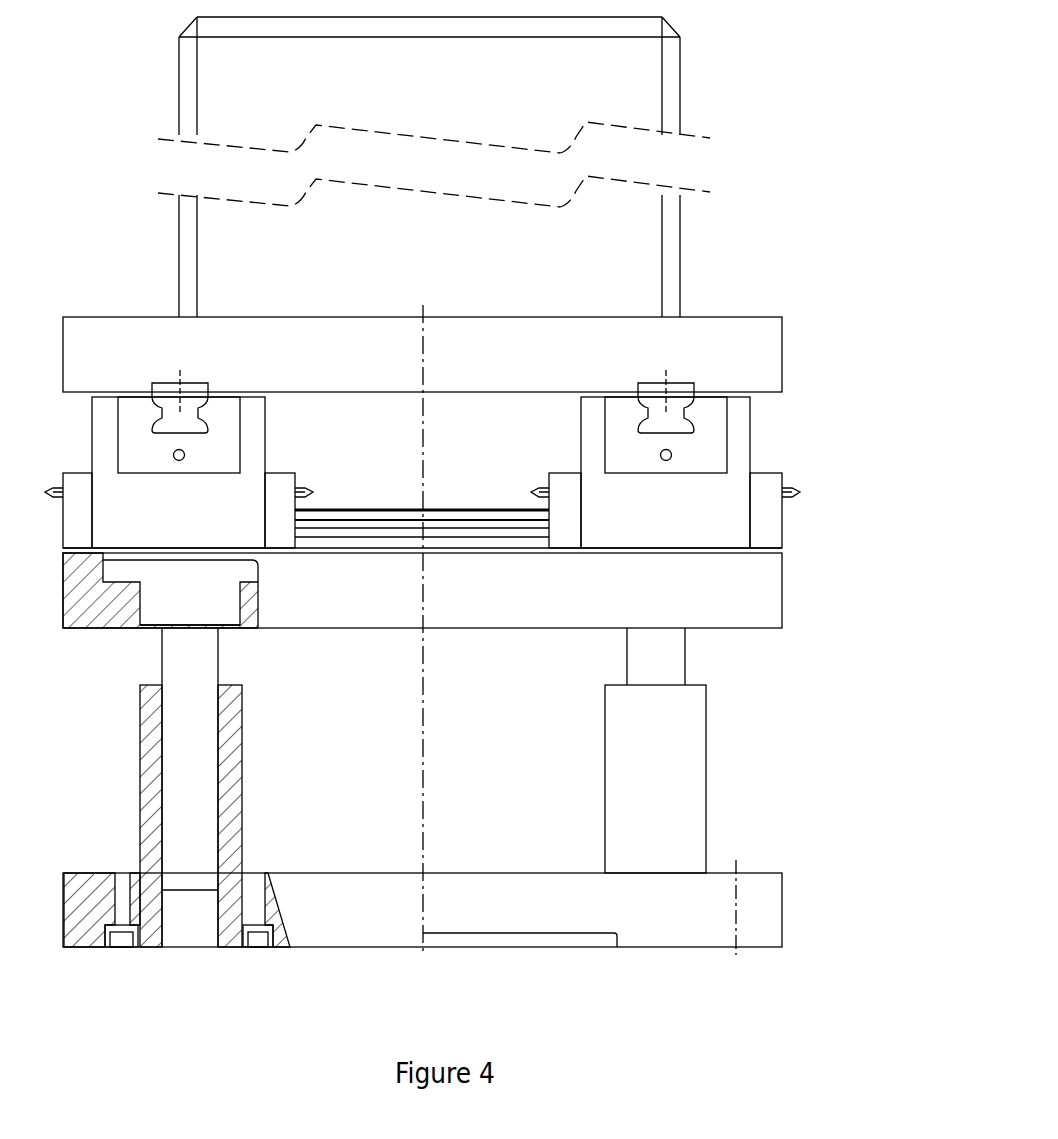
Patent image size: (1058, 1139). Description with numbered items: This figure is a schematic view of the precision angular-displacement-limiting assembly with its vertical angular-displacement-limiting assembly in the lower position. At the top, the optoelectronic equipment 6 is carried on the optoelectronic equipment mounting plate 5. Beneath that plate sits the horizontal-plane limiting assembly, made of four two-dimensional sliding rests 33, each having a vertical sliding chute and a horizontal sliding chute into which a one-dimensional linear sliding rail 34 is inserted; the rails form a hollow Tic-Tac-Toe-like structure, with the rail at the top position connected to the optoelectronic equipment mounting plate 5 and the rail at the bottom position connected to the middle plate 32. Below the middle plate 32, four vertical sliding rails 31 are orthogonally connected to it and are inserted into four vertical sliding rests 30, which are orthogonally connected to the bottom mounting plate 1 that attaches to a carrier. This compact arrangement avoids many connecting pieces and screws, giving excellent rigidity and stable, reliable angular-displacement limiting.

The bottom mounting plate 1 is at (511, 865).
The optoelectronic equipment mounting plate 5 is at (511, 328).
The optoelectronic equipment 6 is at (559, 167).
The vertical sliding rest 30 is at (550, 816).
The vertical sliding rail 31 is at (561, 780).
The middle plate 32 is at (511, 570).
The two-dimensional sliding rest 33 is at (745, 459).
The one-dimensional linear sliding rail 34 is at (627, 441).